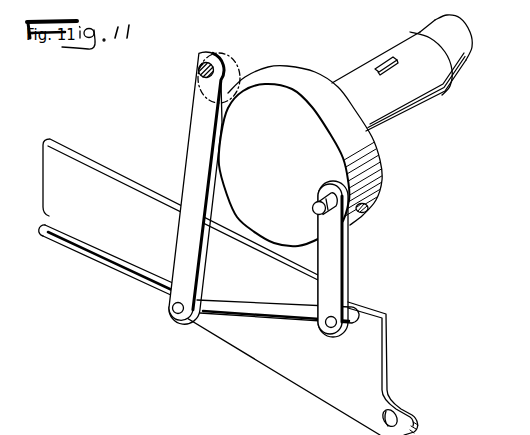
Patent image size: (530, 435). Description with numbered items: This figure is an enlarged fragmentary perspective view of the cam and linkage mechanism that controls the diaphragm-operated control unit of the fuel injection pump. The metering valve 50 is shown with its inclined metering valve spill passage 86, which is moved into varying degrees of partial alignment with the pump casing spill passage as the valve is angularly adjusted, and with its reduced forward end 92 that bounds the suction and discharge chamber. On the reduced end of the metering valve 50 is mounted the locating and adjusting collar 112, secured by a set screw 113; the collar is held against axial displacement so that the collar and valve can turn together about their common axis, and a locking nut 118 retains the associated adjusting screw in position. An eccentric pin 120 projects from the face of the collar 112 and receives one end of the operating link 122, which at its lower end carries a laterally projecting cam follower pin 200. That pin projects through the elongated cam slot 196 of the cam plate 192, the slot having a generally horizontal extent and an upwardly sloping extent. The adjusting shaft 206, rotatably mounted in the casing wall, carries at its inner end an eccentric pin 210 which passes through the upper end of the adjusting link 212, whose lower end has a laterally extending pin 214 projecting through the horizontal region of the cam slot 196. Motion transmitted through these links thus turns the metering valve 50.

The metering valve 50 is at (410, 42).
The metering valve spill passage 86 is at (385, 63).
The reduced forward end 92 is at (471, 56).
The locating and adjusting collar 112 is at (379, 185).
The set screw 113 is at (369, 210).
The locking nut 118 is at (276, 372).
The eccentric pin 120 is at (312, 209).
The operating link 122 is at (345, 263).
The cam plate 192 is at (376, 361).
The cam slot 196 is at (120, 259).
The cam follower pin 200 is at (329, 329).
The adjusting shaft 206 is at (204, 95).
The eccentric pin 210 is at (199, 69).
The adjusting link 212 is at (188, 150).
The laterally extending pin 214 is at (176, 316).